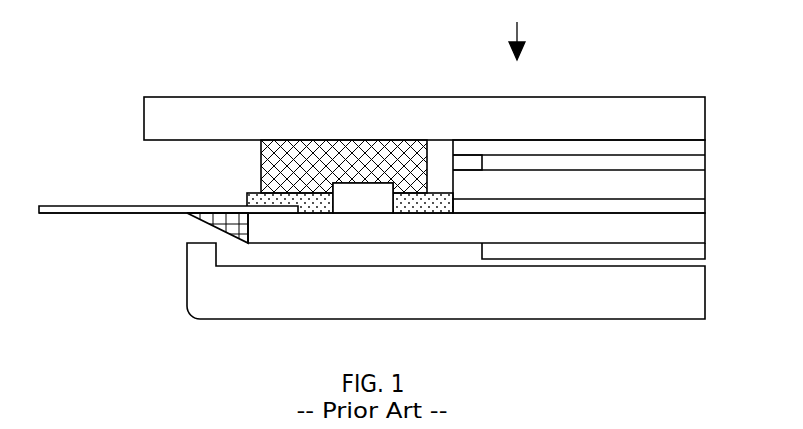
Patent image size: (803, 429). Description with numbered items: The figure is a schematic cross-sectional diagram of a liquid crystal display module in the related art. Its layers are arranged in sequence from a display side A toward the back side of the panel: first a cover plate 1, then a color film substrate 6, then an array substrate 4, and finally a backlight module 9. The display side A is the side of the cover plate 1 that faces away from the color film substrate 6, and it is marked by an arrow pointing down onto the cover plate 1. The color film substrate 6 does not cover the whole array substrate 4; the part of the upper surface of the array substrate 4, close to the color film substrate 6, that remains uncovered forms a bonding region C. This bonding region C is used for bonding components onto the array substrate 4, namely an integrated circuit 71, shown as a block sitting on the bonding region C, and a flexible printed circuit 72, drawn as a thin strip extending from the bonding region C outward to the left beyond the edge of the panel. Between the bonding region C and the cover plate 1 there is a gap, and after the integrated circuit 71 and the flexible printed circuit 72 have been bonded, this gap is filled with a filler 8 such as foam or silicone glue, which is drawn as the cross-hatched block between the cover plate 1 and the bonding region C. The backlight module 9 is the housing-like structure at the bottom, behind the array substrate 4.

The cover plate 1 is at (417, 123).
The filler 8 is at (283, 152).
The integrated circuit (IC) 71 is at (362, 202).
The bonding region C is at (310, 212).
The flexible printed circuit (FPC) 72 is at (158, 211).
The color film substrate 6 is at (534, 190).
The array substrate 4 is at (601, 232).
The backlight module 9 is at (230, 276).
The display side A is at (517, 30).